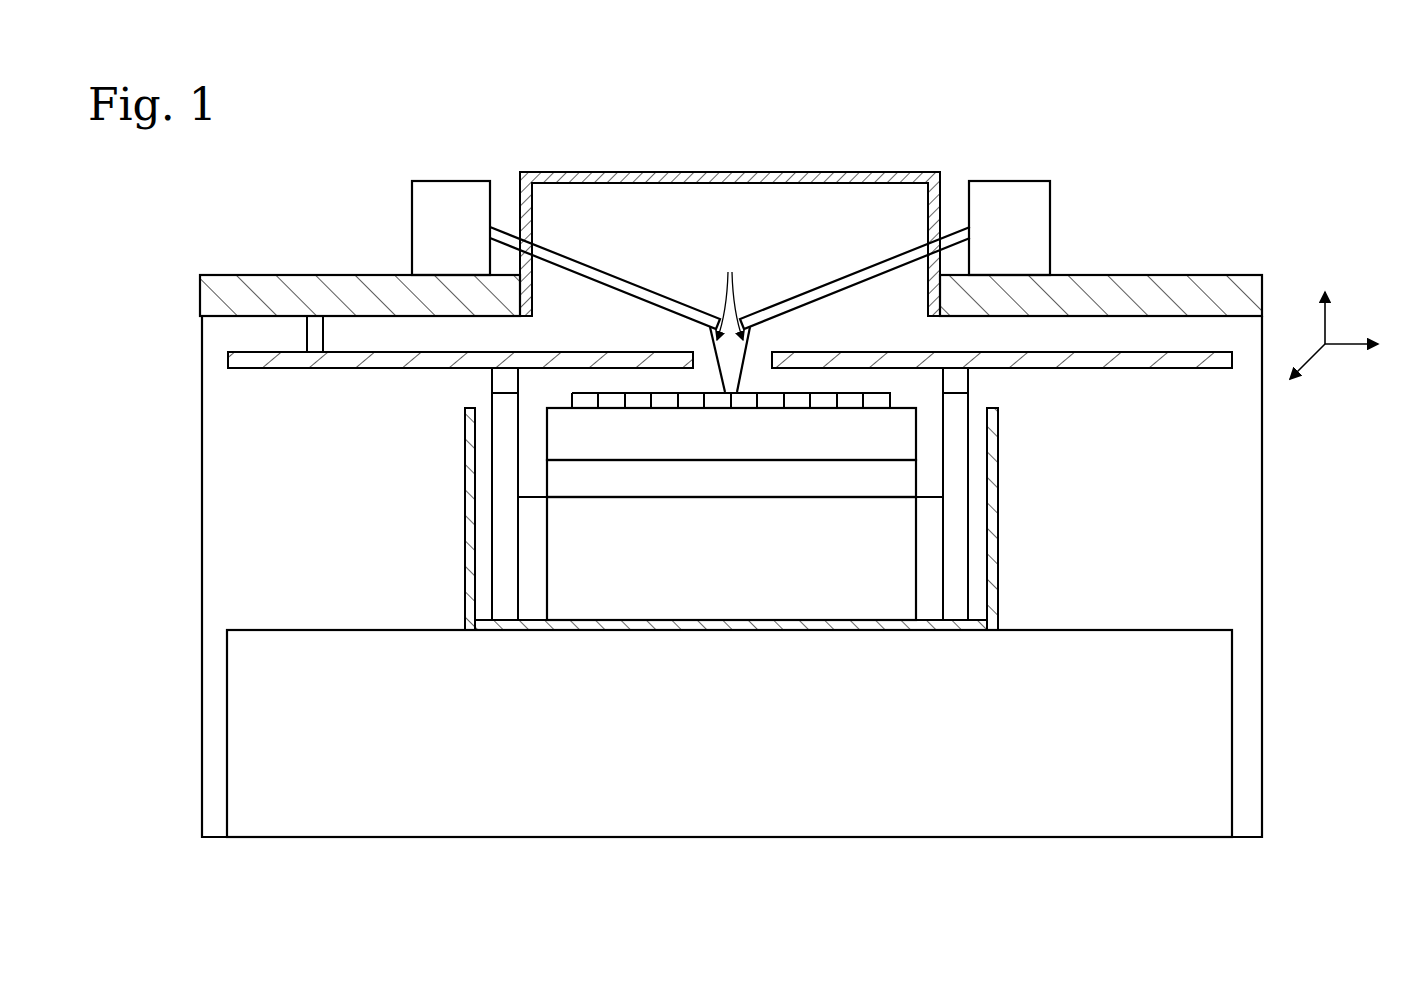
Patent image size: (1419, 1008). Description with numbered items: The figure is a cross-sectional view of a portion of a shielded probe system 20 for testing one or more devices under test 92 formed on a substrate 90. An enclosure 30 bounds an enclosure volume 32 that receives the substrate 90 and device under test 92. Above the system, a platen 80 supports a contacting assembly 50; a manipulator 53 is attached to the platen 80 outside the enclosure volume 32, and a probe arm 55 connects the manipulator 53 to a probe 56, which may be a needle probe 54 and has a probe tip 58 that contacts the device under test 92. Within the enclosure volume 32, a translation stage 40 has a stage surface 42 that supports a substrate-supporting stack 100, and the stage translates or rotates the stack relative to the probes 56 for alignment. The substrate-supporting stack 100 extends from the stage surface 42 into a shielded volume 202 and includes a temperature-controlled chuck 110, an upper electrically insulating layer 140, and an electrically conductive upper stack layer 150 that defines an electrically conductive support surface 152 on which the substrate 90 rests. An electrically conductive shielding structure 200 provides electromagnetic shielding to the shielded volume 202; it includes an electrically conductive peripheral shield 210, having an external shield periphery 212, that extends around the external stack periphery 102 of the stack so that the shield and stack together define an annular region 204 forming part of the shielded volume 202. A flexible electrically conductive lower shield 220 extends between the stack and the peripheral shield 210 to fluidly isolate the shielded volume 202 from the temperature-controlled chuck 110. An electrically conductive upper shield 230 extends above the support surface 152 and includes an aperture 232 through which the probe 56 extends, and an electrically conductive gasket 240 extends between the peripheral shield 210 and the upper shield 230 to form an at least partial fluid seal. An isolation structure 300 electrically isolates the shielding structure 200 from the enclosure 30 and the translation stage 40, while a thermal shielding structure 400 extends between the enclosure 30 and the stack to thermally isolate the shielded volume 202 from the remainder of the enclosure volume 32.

The shielded probe system 20 is at (212, 164).
The enclosure 30 is at (198, 499).
The enclosure volume 32 is at (225, 561).
The translation stage 40 is at (714, 746).
The stage surface 42 is at (313, 622).
The contacting assembly 50 is at (375, 232).
The manipulator 53 is at (452, 181).
The needle probe 54 is at (747, 331).
The probe arm 55 is at (567, 258).
The probe 56 is at (730, 290).
The probe tip 58 is at (722, 390).
The platen 80 is at (198, 300).
The substrate 90 is at (733, 426).
The device under test 92 is at (689, 406).
The substrate-supporting stack 100 is at (665, 514).
The external stack periphery 102 is at (542, 439).
The temperature-controlled chuck 110 is at (708, 571).
The upper electrically insulating layer 140 is at (708, 488).
The electrically conductive upper stack layer 150 is at (708, 446).
The electrically conductive support surface 152 is at (870, 409).
The electrically conductive shielding structure 200 is at (717, 514).
The shielded volume 202 is at (533, 413).
The annular region 204 is at (932, 446).
The electrically conductive peripheral shield 210 is at (497, 431).
The external shield periphery 212 is at (488, 478).
The flexible electrically conductive lower shield 220 is at (956, 505).
The electrically conductive upper shield 230 is at (1125, 370).
The aperture 232 is at (695, 357).
The electrically conductive gasket 240 is at (492, 377).
The isolation structure 300 is at (502, 544).
The thermal shielding structure 400 is at (464, 601).